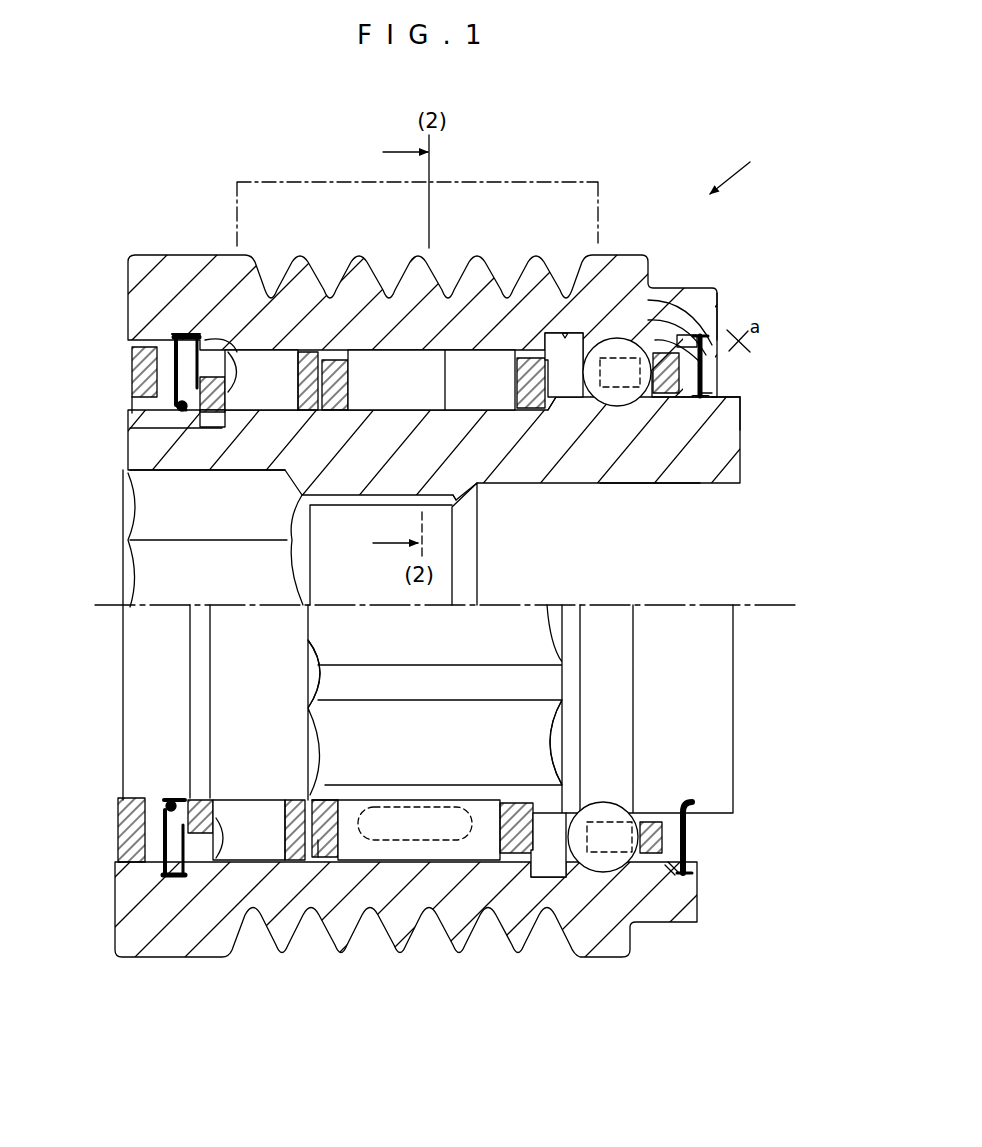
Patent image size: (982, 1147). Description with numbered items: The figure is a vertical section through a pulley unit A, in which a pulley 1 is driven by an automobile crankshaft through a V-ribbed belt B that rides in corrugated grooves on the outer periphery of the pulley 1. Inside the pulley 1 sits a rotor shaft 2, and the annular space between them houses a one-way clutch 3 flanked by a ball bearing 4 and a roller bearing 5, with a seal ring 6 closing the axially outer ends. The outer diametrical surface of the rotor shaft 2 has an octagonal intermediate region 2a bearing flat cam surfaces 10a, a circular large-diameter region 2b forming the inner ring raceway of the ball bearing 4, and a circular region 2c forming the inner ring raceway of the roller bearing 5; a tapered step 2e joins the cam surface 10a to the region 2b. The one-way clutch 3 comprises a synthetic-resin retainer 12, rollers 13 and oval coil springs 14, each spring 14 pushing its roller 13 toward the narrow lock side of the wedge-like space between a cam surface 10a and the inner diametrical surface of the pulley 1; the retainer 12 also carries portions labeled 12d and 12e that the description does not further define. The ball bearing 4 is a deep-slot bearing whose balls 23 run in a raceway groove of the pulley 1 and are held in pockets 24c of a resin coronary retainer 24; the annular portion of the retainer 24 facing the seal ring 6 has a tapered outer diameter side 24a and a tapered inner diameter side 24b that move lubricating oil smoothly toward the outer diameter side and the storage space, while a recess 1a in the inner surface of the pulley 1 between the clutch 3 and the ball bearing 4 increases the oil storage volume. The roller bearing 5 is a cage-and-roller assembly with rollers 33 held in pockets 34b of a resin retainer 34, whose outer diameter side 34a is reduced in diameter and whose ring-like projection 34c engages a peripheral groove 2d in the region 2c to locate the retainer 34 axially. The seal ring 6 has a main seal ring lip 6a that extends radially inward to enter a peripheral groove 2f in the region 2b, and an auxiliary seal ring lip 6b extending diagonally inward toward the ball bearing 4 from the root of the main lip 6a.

The pulley 1 is at (640, 257).
The recess 1a is at (584, 335).
The rotor shaft 2 is at (728, 462).
The axially intermediate region 2a is at (466, 490).
The large-diameter region 2b is at (650, 465).
The region 2c is at (188, 438).
The peripheral groove 2d is at (224, 418).
The tapered step 2e is at (558, 401).
The peripheral groove 2f is at (735, 378).
The one-way clutch 3 is at (455, 340).
The ball bearing 4 is at (633, 333).
The roller bearing 5 is at (243, 342).
The seal ring 6 is at (173, 373).
The main seal ring lip 6a is at (170, 408).
The auxiliary seal ring lip 6b is at (728, 403).
The flat cam surfaces 10a is at (447, 411).
The retainer 12 is at (533, 352).
The inner ring end face 12d is at (318, 845).
The inner ring shoulder 12e is at (325, 800).
The rollers 13 is at (402, 365).
The oval coil springs 14 is at (423, 806).
The balls 23 is at (672, 300).
The coronary retainer 24 is at (705, 298).
The outer diameter side 24a is at (715, 309).
The inner diameter side 24b is at (712, 412).
The pocket 24c is at (728, 422).
The rollers 33 is at (277, 363).
The retainer 34 is at (308, 373).
The outer diameter side 34a is at (232, 347).
The pockets 34b is at (182, 337).
The ring-like projection 34c is at (140, 428).
The pulley unit A is at (785, 154).
The V-ribbed belt B is at (513, 180).